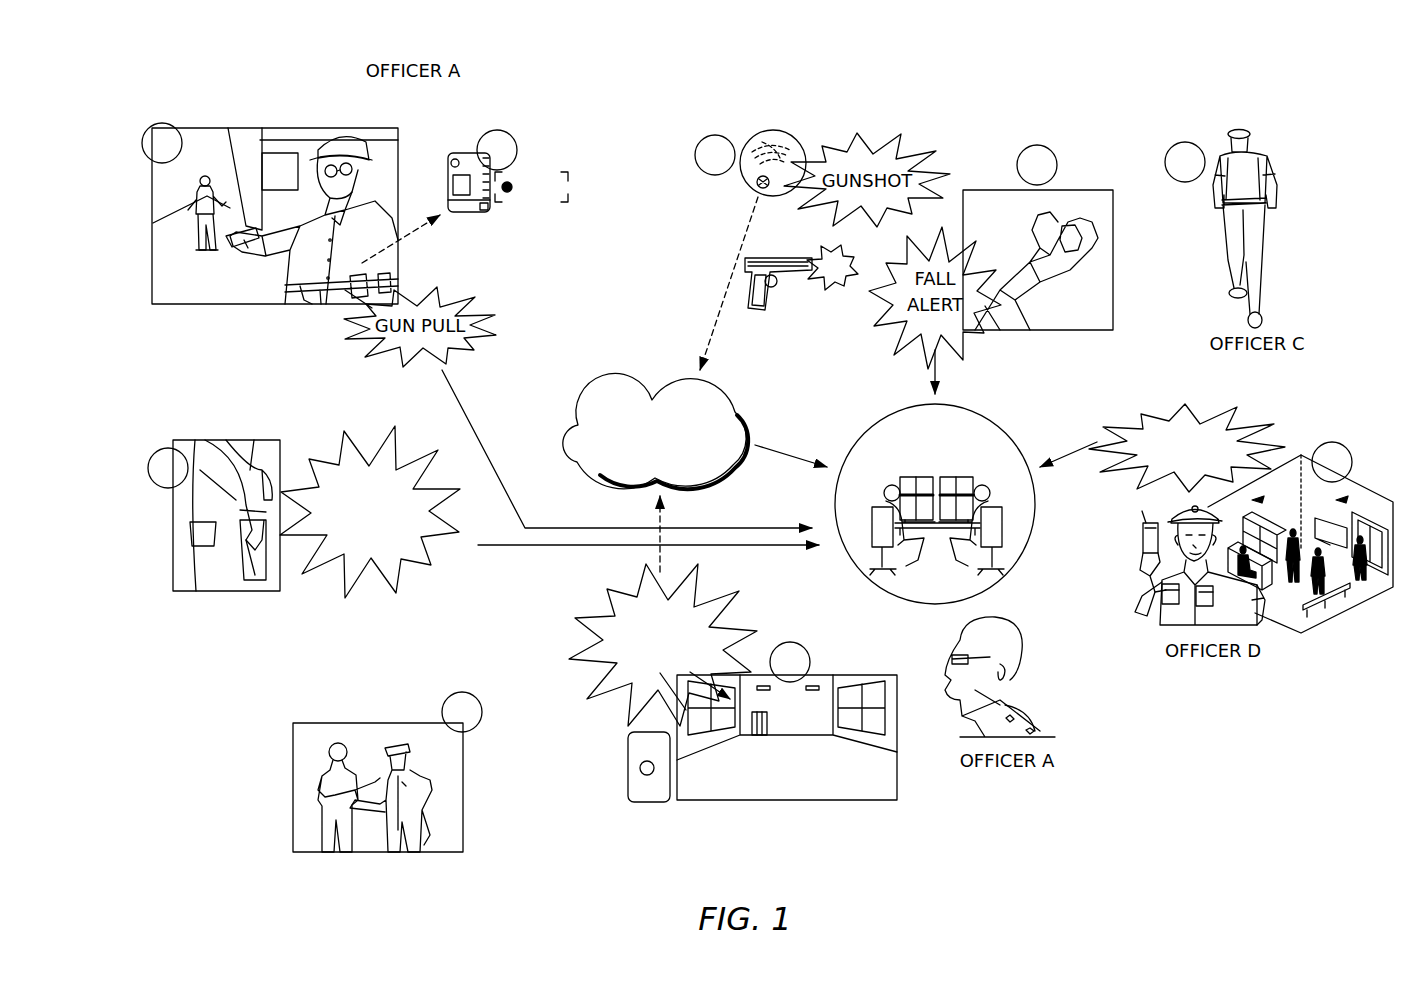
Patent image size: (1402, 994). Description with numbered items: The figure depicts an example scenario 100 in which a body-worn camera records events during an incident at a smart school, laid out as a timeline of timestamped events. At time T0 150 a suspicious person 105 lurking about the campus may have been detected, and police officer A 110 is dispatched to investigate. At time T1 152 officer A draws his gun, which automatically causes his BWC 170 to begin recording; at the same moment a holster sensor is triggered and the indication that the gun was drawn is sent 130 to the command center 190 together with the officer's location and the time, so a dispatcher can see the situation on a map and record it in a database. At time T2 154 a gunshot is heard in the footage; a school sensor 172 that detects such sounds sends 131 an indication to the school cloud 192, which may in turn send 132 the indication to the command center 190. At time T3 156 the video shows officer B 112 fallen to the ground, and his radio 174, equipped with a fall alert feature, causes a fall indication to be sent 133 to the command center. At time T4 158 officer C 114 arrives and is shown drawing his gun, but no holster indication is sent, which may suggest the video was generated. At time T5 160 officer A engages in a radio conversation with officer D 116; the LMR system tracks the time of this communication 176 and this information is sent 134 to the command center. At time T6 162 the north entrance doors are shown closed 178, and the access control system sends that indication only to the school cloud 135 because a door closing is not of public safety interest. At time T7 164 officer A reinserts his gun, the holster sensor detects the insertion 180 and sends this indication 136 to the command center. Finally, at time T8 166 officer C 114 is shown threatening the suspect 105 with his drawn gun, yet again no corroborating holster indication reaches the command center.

The example scenario 100 is at (74, 39).
The suspicious person 105 is at (205, 176).
The police officer A 110 is at (343, 140).
The officer B 112 is at (1098, 238).
The officer C 114 is at (1270, 161).
The officer D 116 is at (1140, 582).
The sending of gun drawn indication 130 is at (477, 433).
The sending of gunshot indication to school cloud 131 is at (740, 258).
The sending of gunshot indication to command center 132 is at (780, 452).
The sending of fall alert indication 133 is at (937, 372).
The sending of LMR communication information 134 is at (1078, 452).
The sending of doors closed indication to school cloud 135 is at (662, 520).
The sending of gun insertion indication 136 is at (745, 548).
The time T0 150 is at (157, 126).
The time T1 152 is at (500, 130).
The time T2 154 is at (712, 135).
The time T3 156 is at (1045, 146).
The time T4 158 is at (1185, 142).
The time T5 160 is at (1340, 442).
The time T6 162 is at (795, 643).
The time T7 164 is at (155, 455).
The time T8 166 is at (458, 692).
The BWC 170 is at (490, 210).
The sensor 172 is at (778, 130).
The radio 174 is at (790, 334).
The communication 176 is at (1233, 420).
The doors closed 178 is at (590, 620).
The insertion 180 is at (395, 445).
The command center 190 is at (993, 420).
The school cloud 192 is at (622, 383).